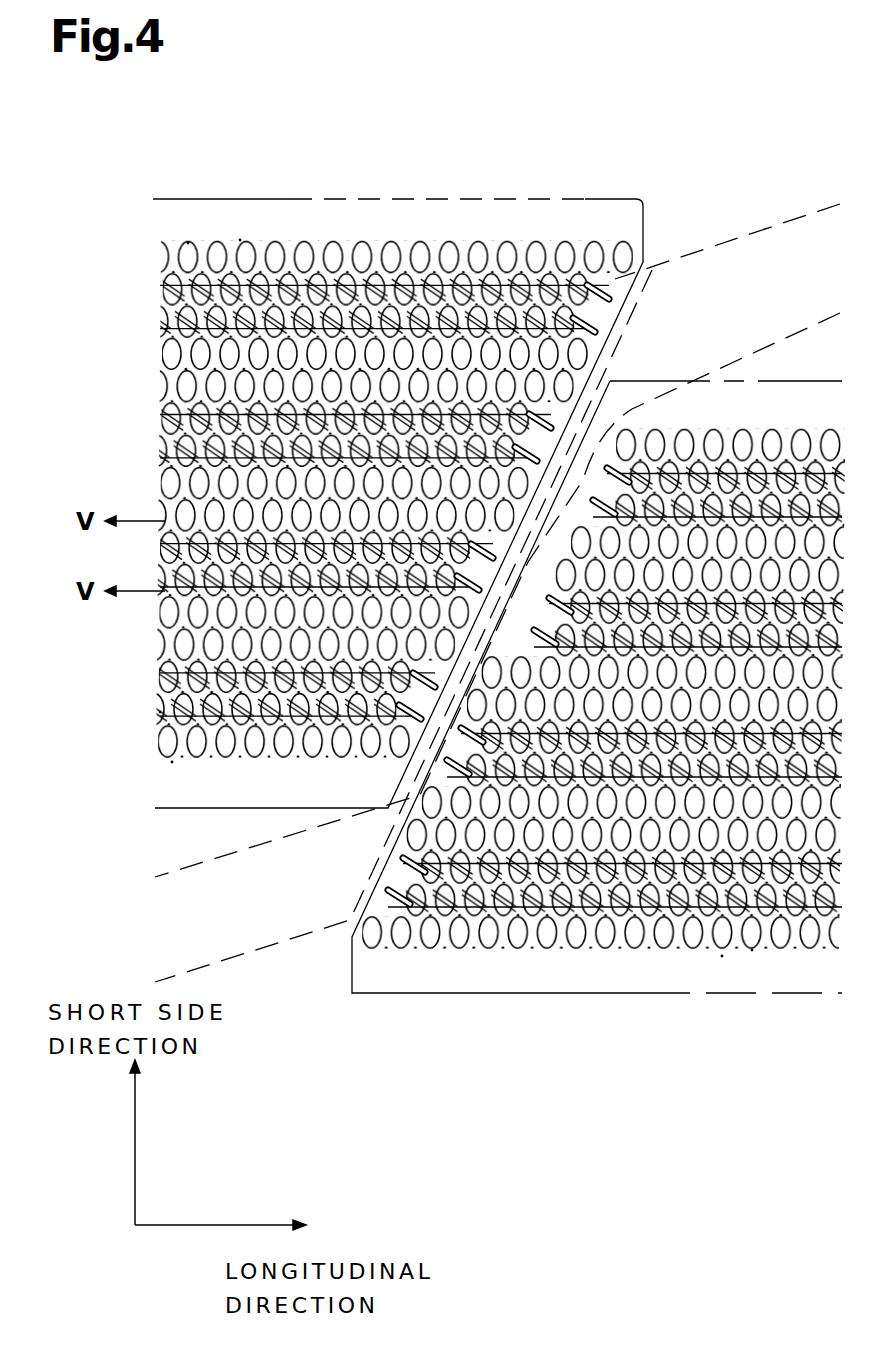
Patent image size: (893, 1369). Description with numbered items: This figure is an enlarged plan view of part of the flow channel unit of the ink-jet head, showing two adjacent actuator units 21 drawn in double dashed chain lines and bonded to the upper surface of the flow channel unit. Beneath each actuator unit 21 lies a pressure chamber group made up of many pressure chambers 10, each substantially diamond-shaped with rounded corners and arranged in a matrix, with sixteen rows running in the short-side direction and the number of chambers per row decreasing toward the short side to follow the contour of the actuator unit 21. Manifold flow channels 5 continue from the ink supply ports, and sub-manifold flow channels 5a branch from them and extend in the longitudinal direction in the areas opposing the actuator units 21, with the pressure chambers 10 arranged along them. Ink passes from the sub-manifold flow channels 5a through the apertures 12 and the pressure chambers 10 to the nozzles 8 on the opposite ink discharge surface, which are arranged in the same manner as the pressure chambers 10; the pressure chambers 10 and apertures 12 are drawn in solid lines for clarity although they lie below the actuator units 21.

The manifold flow channel 5 is at (708, 284).
The sub-manifold flow channel 5a is at (452, 350).
The nozzle 8 is at (276, 242).
The pressure chamber 10 is at (232, 250).
The aperture 12 is at (188, 244).
The actuator unit 21 is at (376, 199).